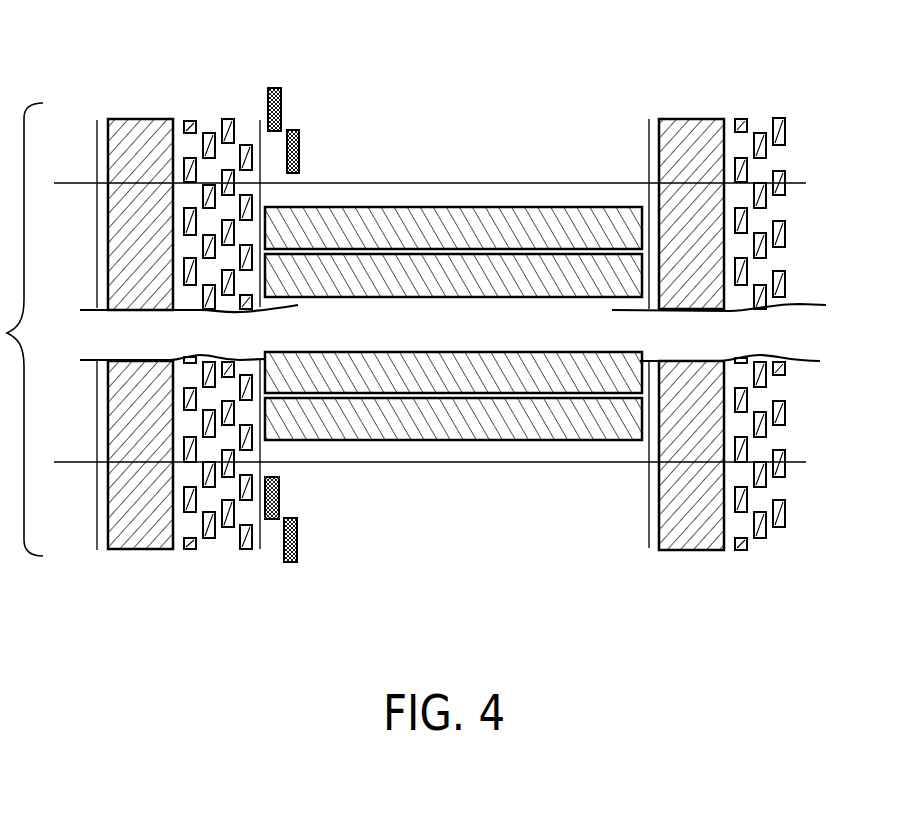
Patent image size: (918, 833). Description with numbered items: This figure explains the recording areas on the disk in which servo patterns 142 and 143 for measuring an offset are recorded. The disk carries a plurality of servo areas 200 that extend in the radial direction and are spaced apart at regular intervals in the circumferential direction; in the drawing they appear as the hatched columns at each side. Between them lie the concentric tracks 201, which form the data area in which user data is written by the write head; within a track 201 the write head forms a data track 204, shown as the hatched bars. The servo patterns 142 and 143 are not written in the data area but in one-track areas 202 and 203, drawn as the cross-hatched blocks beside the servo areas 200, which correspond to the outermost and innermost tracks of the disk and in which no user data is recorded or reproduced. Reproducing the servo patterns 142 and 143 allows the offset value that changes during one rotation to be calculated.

The servo area 200 is at (178, 116).
The track 201 is at (453, 349).
The one-track area 202 is at (297, 92).
The one-track area 203 is at (284, 568).
The data track 204 is at (489, 218).
The servo pattern 142 is at (267, 104).
The servo pattern 143 is at (300, 150).